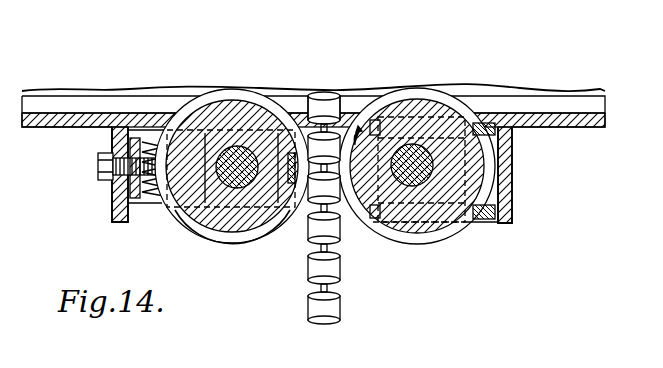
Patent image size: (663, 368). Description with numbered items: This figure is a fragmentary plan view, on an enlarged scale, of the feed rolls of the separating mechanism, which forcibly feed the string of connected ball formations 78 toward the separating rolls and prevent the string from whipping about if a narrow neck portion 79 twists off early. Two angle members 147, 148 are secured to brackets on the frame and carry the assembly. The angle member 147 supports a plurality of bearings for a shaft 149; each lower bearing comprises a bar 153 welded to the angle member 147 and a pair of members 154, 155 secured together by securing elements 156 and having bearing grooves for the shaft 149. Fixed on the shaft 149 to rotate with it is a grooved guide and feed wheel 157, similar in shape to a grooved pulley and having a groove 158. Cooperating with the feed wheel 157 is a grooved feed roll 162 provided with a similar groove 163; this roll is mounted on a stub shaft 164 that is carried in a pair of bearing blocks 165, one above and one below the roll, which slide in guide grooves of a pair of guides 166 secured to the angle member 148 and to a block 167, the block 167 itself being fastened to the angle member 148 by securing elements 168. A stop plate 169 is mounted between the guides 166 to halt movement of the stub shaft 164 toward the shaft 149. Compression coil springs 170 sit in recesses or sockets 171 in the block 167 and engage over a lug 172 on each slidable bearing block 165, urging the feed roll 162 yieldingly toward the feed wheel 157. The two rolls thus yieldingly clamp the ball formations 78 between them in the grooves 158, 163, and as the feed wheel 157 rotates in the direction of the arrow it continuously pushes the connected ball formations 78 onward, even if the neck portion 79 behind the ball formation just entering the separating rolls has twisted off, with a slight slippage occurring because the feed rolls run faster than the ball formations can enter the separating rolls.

The ball formations 78 is at (330, 93).
The narrow neck portions 79 is at (320, 284).
The angle member 147 is at (512, 167).
The angle member 148 is at (112, 203).
The shaft 149 is at (413, 163).
The bar 153 is at (483, 213).
The bearing member 154 is at (455, 228).
The bearing member 155 is at (382, 225).
The securing elements 156 is at (379, 115).
The grooved guide and feed wheel 157 is at (413, 107).
The groove 158 is at (445, 233).
The grooved feed roll 162 is at (242, 228).
The groove 163 is at (262, 70).
The stub shaft 164 is at (228, 148).
The bearing blocks 165 is at (293, 130).
The guides 166 is at (157, 147).
The block 167 is at (134, 150).
The securing elements 168 is at (112, 188).
The stop plate 169 is at (334, 100).
The compression coil springs 170 is at (172, 130).
The recesses or sockets 171 is at (144, 205).
The lug 172 is at (211, 244).